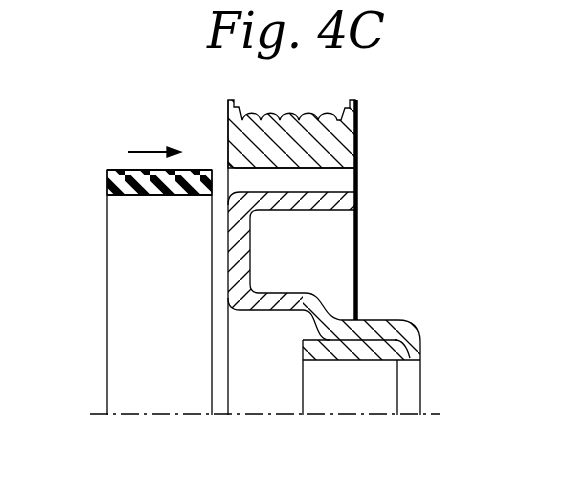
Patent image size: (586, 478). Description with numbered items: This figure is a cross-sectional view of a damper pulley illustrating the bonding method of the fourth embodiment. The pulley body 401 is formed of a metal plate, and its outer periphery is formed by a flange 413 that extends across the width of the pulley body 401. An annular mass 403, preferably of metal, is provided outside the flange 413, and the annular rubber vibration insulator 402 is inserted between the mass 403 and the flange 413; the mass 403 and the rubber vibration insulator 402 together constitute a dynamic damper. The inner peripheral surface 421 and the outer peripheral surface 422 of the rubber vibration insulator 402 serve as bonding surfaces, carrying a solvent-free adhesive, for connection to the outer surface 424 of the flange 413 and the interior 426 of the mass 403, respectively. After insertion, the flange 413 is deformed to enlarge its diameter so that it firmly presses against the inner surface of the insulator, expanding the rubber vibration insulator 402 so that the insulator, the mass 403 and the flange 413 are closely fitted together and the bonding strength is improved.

The pulley body 401 is at (369, 268).
The rubber vibration insulator 402 is at (128, 182).
The annular mass 403 is at (350, 140).
The flange 413 is at (350, 210).
The inner peripheral surface 421 is at (145, 199).
The outer peripheral surface 422 is at (196, 170).
The outer surface of flange 424 is at (308, 192).
The interior of mass 426 is at (308, 172).